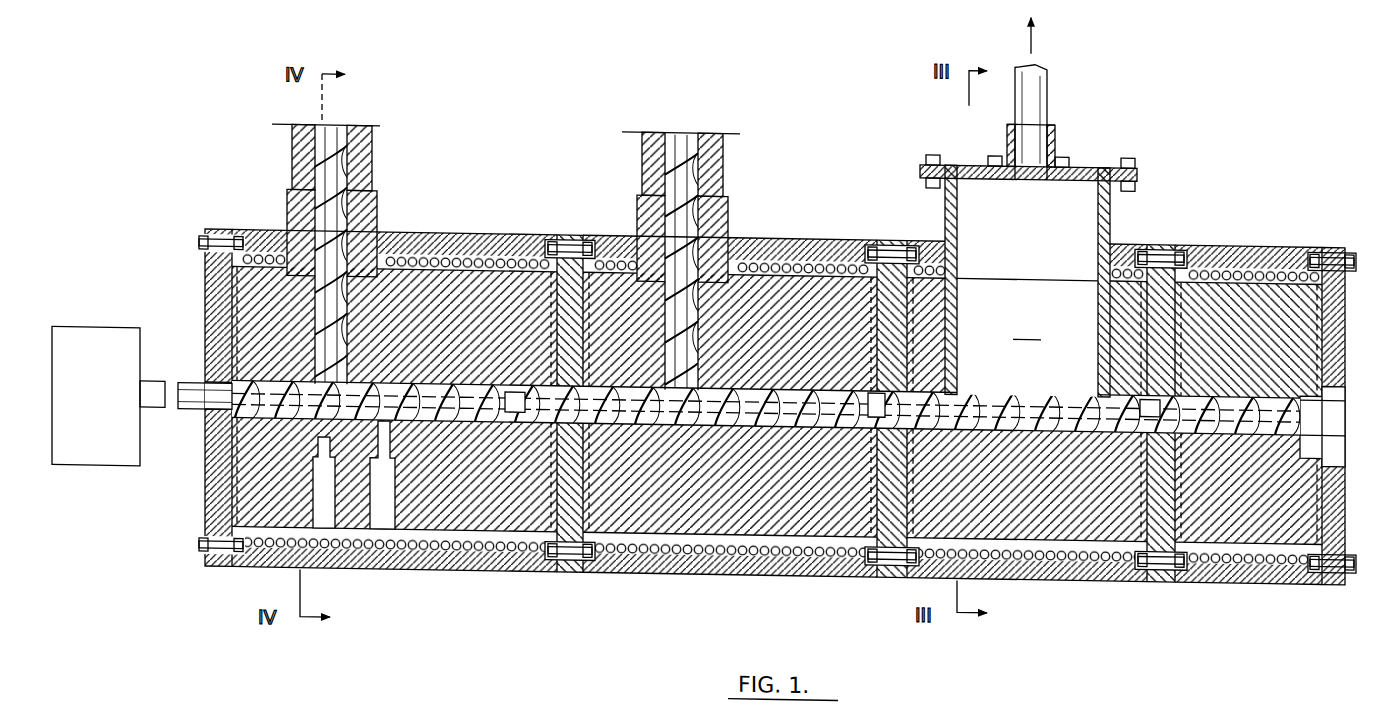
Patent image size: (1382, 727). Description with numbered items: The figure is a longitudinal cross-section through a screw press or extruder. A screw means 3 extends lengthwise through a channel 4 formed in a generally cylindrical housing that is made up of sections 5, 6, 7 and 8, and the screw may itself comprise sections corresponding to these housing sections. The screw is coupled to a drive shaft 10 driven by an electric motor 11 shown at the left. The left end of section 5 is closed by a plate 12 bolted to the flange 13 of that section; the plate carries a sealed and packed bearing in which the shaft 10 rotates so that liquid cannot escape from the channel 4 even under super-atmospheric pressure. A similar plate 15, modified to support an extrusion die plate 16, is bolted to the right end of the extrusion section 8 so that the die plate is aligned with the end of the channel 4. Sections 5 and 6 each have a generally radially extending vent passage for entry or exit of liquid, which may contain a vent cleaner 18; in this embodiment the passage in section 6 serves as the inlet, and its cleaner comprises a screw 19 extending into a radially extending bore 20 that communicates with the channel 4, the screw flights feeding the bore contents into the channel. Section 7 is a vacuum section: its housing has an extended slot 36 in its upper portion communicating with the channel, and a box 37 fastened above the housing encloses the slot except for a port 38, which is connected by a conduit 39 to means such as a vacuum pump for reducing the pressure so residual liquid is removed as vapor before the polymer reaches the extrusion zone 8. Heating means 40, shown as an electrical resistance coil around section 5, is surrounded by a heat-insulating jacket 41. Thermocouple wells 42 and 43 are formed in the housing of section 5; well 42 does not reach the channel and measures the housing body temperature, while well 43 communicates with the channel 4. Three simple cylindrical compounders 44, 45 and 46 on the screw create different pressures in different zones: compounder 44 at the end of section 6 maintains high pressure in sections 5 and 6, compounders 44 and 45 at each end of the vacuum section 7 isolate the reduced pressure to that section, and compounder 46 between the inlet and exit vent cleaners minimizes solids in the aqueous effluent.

The screw means 3 is at (766, 392).
The channel 4 is at (386, 384).
The section 5 is at (394, 407).
The section 6 is at (722, 572).
The vacuum section 7 is at (1007, 573).
The extrusion section 8 is at (1212, 572).
The drive shaft 10 is at (190, 410).
The electric motor 11 is at (120, 329).
The plate 12 is at (207, 347).
The flange 13 is at (232, 236).
The plate 15 is at (1345, 314).
The extrusion die plate 16 is at (1338, 423).
The vent cleaner 18 is at (380, 188).
The screw 19 is at (350, 230).
The bore 20 is at (700, 348).
The slot 36 is at (1027, 281).
The box 37 is at (1100, 146).
The port 38 is at (1034, 166).
The conduit 39 is at (1045, 82).
The heating means 40 is at (493, 249).
The heat-insulating jacket 41 is at (440, 229).
The thermocouple well 42 is at (328, 486).
The thermocouple well 43 is at (394, 486).
The compounder 44 is at (870, 410).
The compounder 45 is at (1148, 402).
The compounder 46 is at (514, 410).